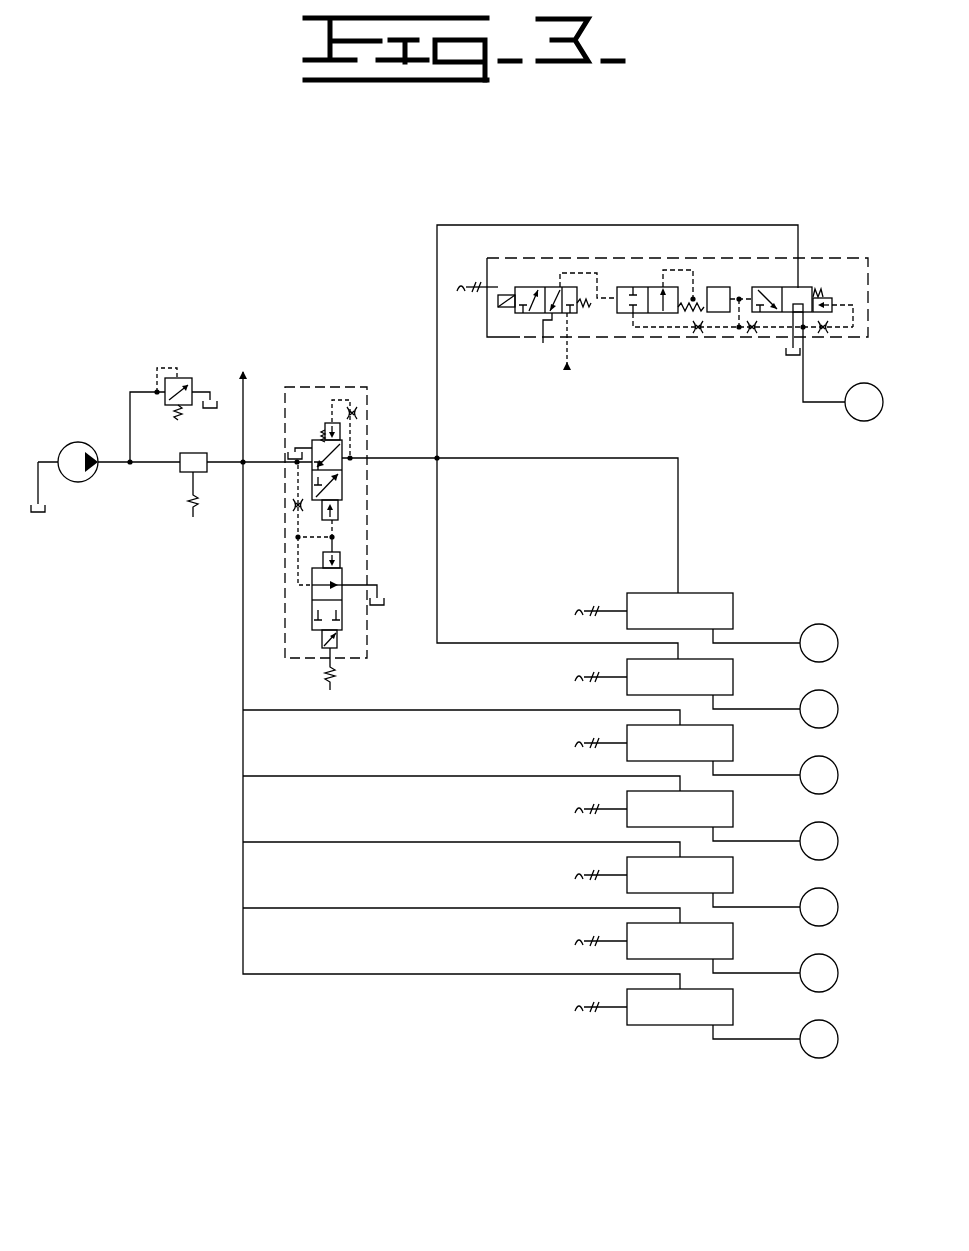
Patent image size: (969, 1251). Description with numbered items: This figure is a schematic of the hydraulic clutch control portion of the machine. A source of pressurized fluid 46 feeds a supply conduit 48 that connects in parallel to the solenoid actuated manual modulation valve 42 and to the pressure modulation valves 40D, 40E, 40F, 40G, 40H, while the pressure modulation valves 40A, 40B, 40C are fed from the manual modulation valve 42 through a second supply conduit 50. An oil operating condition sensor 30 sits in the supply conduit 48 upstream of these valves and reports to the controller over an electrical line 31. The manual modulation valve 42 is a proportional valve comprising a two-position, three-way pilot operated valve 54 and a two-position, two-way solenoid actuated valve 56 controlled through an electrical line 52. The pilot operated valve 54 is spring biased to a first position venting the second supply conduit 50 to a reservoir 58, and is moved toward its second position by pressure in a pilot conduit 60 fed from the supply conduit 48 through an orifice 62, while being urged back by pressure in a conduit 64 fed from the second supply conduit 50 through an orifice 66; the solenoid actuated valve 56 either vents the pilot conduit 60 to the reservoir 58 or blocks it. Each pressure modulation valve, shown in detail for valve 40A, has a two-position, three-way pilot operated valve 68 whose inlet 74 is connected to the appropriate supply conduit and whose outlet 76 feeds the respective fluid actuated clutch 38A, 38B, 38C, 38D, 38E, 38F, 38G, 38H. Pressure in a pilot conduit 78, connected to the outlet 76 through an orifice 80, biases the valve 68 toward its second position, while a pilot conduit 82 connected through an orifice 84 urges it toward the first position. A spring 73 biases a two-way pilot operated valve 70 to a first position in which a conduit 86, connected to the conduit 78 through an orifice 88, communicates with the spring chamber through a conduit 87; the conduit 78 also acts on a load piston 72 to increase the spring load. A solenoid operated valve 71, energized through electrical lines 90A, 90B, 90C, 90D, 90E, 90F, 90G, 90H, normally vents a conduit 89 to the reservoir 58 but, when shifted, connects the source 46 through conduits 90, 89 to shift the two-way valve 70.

The oil operating condition sensor 30 is at (178, 471).
The electrical line 31 is at (190, 511).
The fluid actuated clutch 38A is at (851, 418).
The fluid actuated clutch 38B is at (833, 653).
The fluid actuated clutch 38C is at (833, 719).
The fluid actuated clutch 38D is at (833, 785).
The fluid actuated clutch 38E is at (833, 851).
The fluid actuated clutch 38F is at (833, 917).
The fluid actuated clutch 38G is at (833, 983).
The fluid actuated clutch 38H is at (833, 1049).
The solenoid actuated pressure modulation valve 40A is at (487, 320).
The solenoid actuated pressure modulation valve 40B is at (700, 621).
The solenoid actuated pressure modulation valve 40C is at (700, 687).
The solenoid actuated pressure modulation valve 40D is at (700, 753).
The solenoid actuated pressure modulation valve 40E is at (700, 819).
The solenoid actuated pressure modulation valve 40F is at (700, 885).
The solenoid actuated pressure modulation valve 40G is at (700, 951).
The solenoid actuated pressure modulation valve 40H is at (700, 1017).
The solenoid actuated manual modulation valve 42 is at (336, 387).
The source of pressurized fluid 46 is at (77, 441).
The supply conduit 48 is at (243, 503).
The second supply conduit 50 is at (434, 470).
The electrical line 52 is at (333, 663).
The two-position, three-way pilot operated valve 54 is at (314, 440).
The two-position, two-way solenoid actuated valve 56 is at (306, 616).
The reservoir 58 is at (46, 508).
The pilot conduit 60 is at (297, 541).
The orifice 62 is at (295, 511).
The conduit 64 is at (365, 391).
The orifice 66 is at (362, 413).
The two-position, three-way pilot operated valve 68 is at (853, 288).
The two-position, two-way solenoid operated valve 70 is at (613, 287).
The solenoid operated valve 71 is at (460, 285).
The load piston 72 is at (720, 287).
The spring 73 is at (673, 324).
The inlet 74 is at (803, 288).
The outlet 76 is at (803, 316).
The pilot conduit 78 is at (739, 331).
The orifice 80 is at (752, 333).
The pilot conduit 82 is at (853, 315).
The orifice 84 is at (824, 333).
The conduit 86 is at (639, 324).
The conduit 87 is at (670, 270).
The orifice 88 is at (697, 333).
The conduit 89 is at (558, 270).
The conduit 90 is at (238, 376).
The electrical line 90A is at (461, 286).
The electrical line 90B is at (578, 611).
The electrical line 90C is at (578, 677).
The electrical line 90D is at (578, 743).
The electrical line 90E is at (578, 809).
The electrical line 90F is at (578, 875).
The electrical line 90G is at (578, 941).
The electrical line 90H is at (578, 1007).